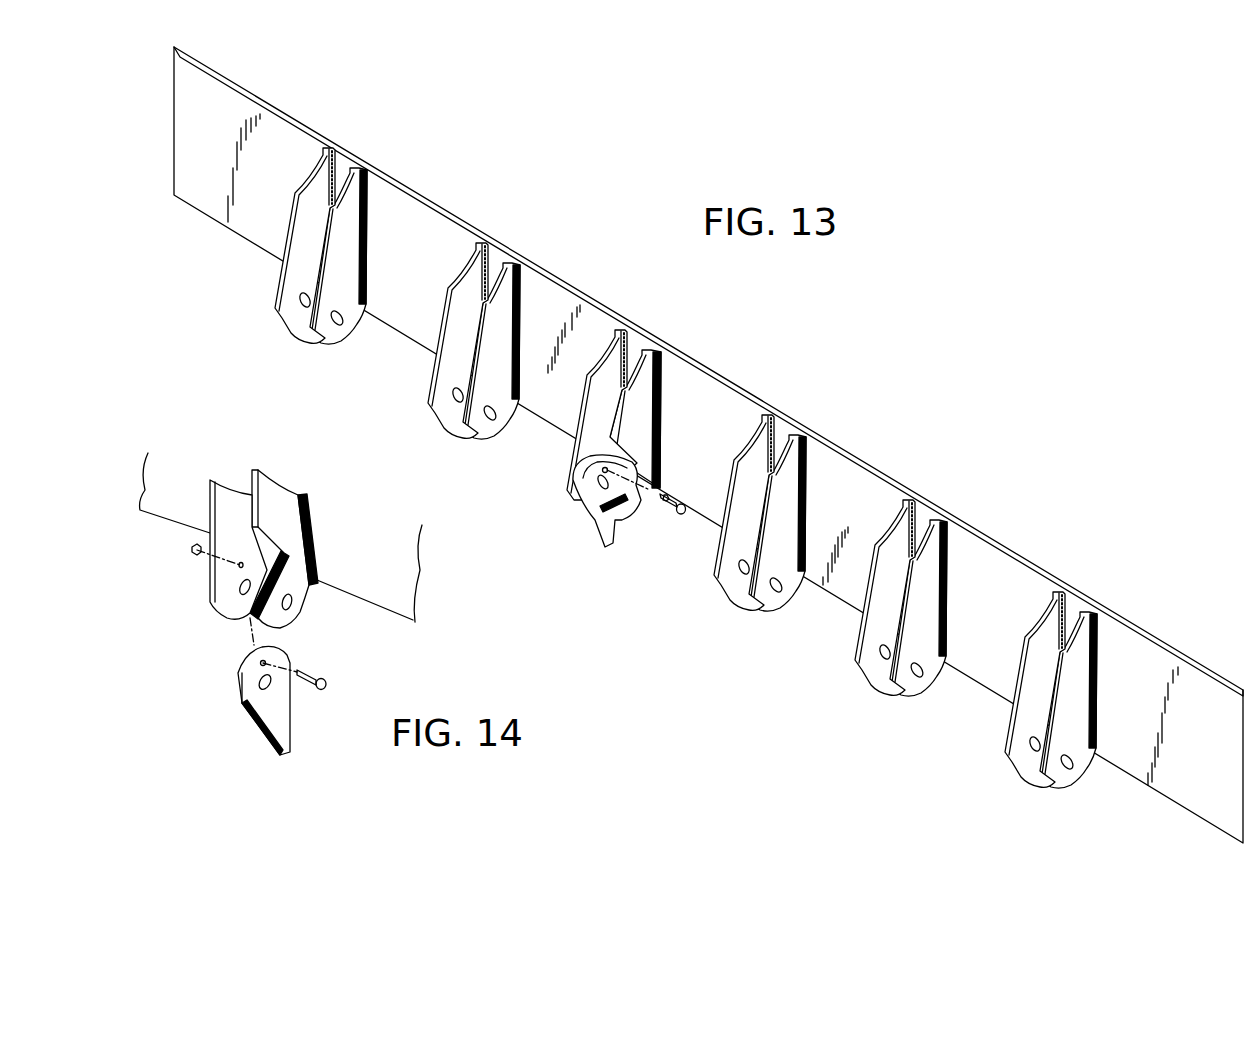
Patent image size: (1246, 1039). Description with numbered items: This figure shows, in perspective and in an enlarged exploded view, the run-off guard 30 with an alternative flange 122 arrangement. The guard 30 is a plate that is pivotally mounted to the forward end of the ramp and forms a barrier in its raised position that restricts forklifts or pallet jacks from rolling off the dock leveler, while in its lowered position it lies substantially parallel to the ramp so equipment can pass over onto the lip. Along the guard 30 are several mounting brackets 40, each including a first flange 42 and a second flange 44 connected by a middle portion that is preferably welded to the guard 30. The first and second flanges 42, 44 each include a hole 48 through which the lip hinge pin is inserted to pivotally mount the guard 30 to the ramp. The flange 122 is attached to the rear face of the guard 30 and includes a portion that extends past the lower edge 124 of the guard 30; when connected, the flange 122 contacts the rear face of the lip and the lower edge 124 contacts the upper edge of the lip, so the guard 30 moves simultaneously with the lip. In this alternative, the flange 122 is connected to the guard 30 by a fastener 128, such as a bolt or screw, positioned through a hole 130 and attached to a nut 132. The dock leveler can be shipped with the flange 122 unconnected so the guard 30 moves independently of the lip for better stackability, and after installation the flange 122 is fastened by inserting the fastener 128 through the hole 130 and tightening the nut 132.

In FIG. 13, the run-off guard 30 is at (995, 558).
In FIG. 14, the run-off guard 30 is at (281, 537).
In FIG. 13, the mounting bracket 40 is at (691, 479).
In FIG. 14, the mounting bracket 40 is at (240, 583).
In FIG. 13, the first flange 42 is at (303, 218).
In FIG. 14, the first flange 42 is at (227, 500).
In FIG. 13, the second flange 44 is at (347, 238).
In FIG. 14, the second flange 44 is at (278, 510).
In FIG. 13, the hole 48 is at (340, 296).
In FIG. 14, the hole 48 is at (243, 592).
In FIG. 13, the flange 122 is at (606, 545).
In FIG. 14, the flange 122 is at (290, 733).
In FIG. 13, the lower edge 124 is at (1150, 785).
In FIG. 13, the fastener 128 is at (672, 515).
In FIG. 14, the fastener 128 is at (312, 680).
In FIG. 13, the hole 130 is at (600, 471).
In FIG. 14, the hole 130 is at (239, 566).
In FIG. 14, the nut 132 is at (192, 549).